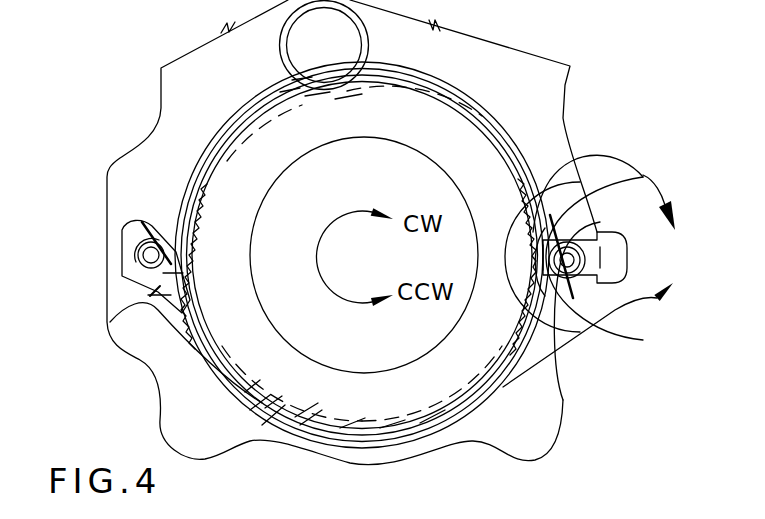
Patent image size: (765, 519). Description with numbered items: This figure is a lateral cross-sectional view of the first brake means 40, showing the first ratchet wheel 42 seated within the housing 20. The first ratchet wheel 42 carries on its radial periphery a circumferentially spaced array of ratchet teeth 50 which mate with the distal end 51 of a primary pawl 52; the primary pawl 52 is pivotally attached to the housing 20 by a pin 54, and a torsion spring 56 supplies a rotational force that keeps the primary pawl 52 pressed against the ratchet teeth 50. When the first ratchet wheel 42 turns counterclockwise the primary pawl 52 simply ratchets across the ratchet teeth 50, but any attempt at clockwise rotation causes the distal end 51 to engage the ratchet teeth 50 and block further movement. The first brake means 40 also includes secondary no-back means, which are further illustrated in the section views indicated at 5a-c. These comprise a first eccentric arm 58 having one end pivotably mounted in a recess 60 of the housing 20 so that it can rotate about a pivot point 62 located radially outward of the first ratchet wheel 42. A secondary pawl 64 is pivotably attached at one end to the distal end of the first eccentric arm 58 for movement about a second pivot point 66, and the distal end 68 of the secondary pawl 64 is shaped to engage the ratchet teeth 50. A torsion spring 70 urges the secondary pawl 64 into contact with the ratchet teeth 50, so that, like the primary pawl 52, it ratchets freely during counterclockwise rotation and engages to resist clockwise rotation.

The housing 20 is at (250, 85).
The first brake means 40 is at (494, 62).
The first ratchet wheel 42 is at (297, 386).
The ratchet teeth 50 is at (198, 251).
The distal end of primary pawl 51 is at (198, 310).
The primary pawl 52 is at (107, 322).
The pin 54 is at (140, 251).
The torsion spring 56 is at (160, 240).
The first eccentric arm 58 is at (588, 320).
The recess 60 is at (643, 177).
The pivot point 62 is at (598, 268).
The secondary pawl 64 is at (560, 255).
The second pivot point 66 is at (568, 235).
The distal end of secondary pawl 68 is at (522, 212).
The torsion spring 70 is at (598, 232).
The section view indicator 5a-c is at (622, 281).